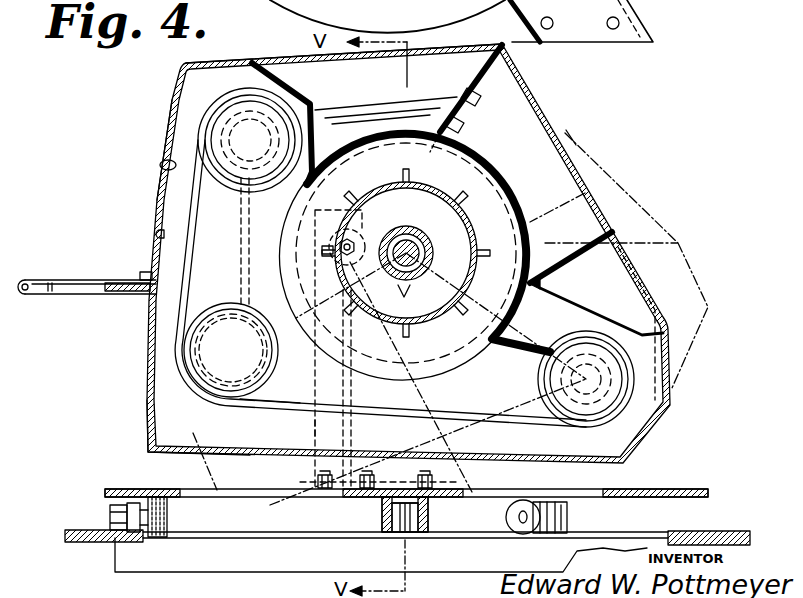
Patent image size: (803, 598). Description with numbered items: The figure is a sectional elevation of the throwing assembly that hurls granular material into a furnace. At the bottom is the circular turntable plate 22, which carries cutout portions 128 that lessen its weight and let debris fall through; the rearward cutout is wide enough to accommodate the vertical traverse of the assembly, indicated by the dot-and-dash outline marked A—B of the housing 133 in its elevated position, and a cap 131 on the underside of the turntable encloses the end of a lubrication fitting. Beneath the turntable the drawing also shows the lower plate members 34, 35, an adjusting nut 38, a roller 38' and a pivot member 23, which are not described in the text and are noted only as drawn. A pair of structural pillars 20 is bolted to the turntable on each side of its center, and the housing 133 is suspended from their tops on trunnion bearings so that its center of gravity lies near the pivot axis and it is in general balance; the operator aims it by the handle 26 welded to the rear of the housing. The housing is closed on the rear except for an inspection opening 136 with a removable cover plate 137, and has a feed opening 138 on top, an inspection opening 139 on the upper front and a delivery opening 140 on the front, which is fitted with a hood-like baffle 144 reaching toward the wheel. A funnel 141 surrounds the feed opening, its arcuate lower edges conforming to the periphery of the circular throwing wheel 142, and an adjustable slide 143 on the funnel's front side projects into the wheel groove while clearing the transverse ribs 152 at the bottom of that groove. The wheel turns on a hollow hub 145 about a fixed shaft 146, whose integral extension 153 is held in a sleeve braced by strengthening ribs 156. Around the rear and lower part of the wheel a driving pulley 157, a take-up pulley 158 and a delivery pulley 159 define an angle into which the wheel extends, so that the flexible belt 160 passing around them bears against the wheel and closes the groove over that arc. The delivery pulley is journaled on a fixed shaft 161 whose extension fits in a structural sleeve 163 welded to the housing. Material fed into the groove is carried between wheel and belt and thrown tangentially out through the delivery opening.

The structural pillars 20 is at (328, 433).
The turntable plate 22 is at (672, 492).
The pivot bushing 23 is at (382, 530).
The handle 26 is at (58, 296).
The lower plate 34 is at (68, 540).
The lower plate extension 35 is at (690, 533).
The adjusting nut 38 is at (161, 529).
The roller 38' is at (516, 532).
The cutout portions 128 is at (296, 462).
The cap 131 is at (428, 519).
The housing 133 is at (149, 413).
The inspection opening 136 is at (160, 234).
The removable cover plate 137 is at (163, 201).
The feed opening 138 is at (345, 92).
The inspection opening 139 is at (545, 108).
The delivery opening 140 is at (615, 296).
The funnel 141 is at (345, 98).
The throwing wheel 142 is at (460, 168).
The slide 143 is at (470, 112).
The hood-like baffle 144 is at (576, 256).
The hollow hub 145 is at (398, 288).
The shaft 146 is at (408, 240).
The transverse ribs 152 is at (492, 186).
The integral extension 153 is at (432, 248).
The strengthening ribs 156 is at (316, 191).
The driving pulley 157 is at (203, 123).
The take-up pulley 158 is at (187, 353).
The delivery pulley 159 is at (548, 396).
The flexible belt 160 is at (256, 415).
The fixed shaft 161 is at (560, 379).
The structural sleeve 163 is at (570, 393).
The elevated position outline A is at (270, 505).
The elevated position outline B is at (578, 141).